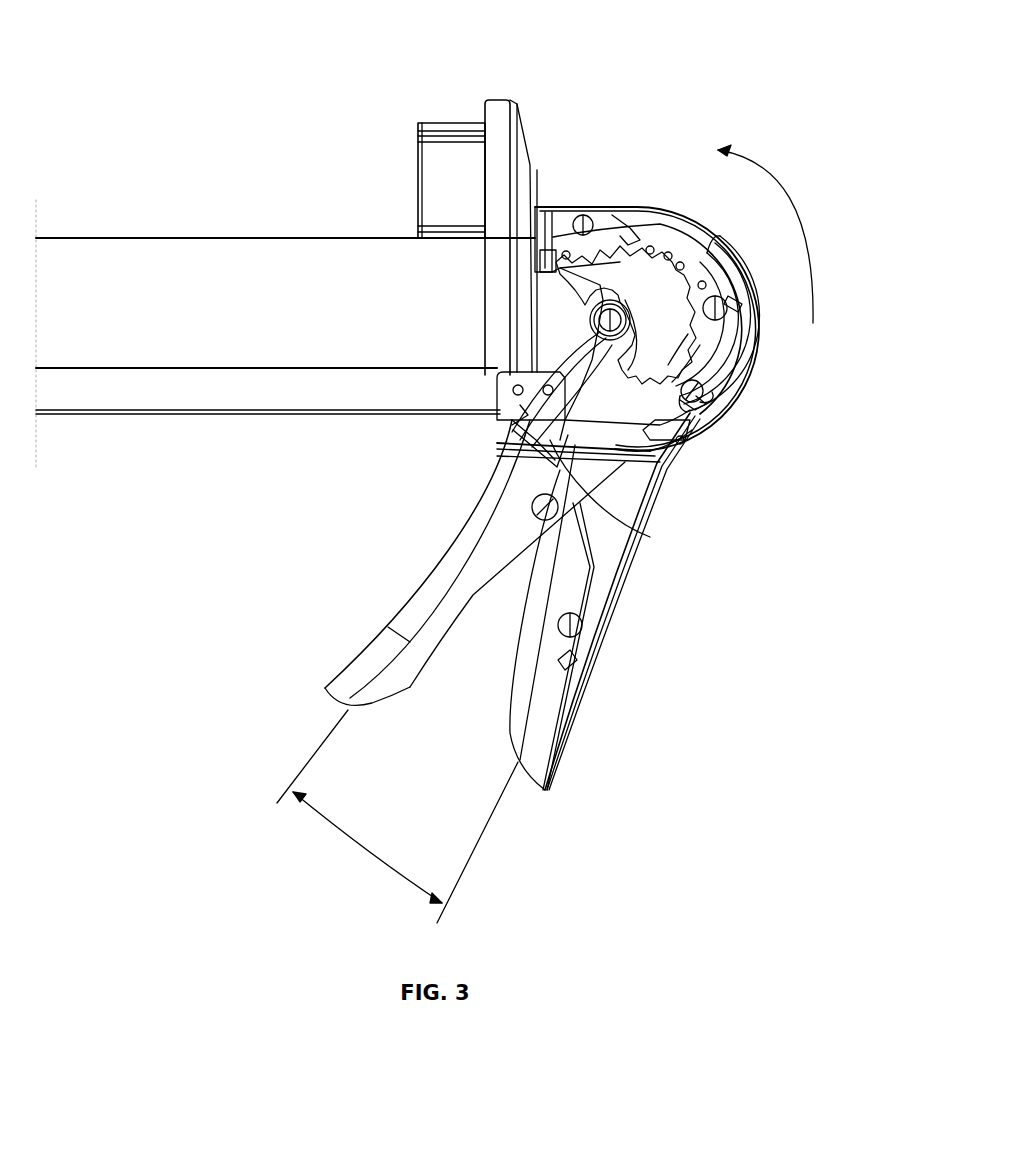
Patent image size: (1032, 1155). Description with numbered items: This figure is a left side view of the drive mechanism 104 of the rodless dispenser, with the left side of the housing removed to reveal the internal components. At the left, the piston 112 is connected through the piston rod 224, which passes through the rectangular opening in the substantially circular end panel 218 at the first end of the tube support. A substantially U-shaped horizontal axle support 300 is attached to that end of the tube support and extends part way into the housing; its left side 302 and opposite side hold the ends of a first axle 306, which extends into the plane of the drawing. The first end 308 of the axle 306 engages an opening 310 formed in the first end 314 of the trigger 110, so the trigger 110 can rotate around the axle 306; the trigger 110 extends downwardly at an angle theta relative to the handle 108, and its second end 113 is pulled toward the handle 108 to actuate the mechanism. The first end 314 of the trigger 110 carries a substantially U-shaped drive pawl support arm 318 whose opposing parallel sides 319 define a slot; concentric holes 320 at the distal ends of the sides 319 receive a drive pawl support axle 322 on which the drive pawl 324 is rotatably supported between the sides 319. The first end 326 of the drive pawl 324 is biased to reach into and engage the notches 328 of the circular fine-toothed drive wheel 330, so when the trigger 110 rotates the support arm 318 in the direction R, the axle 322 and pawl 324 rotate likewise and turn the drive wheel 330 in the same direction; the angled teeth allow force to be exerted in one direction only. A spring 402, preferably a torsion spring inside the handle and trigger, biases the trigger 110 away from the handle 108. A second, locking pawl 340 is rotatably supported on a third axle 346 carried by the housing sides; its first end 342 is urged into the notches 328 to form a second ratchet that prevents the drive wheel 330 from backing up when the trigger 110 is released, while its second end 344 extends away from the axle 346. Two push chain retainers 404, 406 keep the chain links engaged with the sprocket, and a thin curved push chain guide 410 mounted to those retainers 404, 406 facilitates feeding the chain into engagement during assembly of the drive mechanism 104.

The drive mechanism 104 is at (748, 32).
The handle 108 is at (623, 583).
The trigger 110 is at (393, 673).
The piston 112 is at (423, 148).
The second end of the trigger 113 is at (574, 412).
The end panel 218 is at (499, 100).
The piston rod 224 is at (553, 248).
The axle support 300 is at (541, 300).
The left side of the axle support 302 is at (546, 318).
The first axle 306 is at (525, 396).
The first end of the first axle 308 is at (540, 410).
The opening 310 is at (546, 430).
The first end of the trigger 314 is at (560, 442).
The drive pawl support arm 318 is at (698, 407).
The sides of the drive pawl support arm 319 is at (637, 415).
The concentric holes 320 is at (710, 406).
The drive pawl support axle 322 is at (703, 398).
The drive pawl 324 is at (700, 350).
The first end of the drive pawl 326 is at (688, 338).
The notches 328 is at (680, 262).
The drive wheel 330 is at (596, 280).
The second pawl 340 is at (735, 266).
The first end of the second pawl 342 is at (712, 238).
The second end of the second pawl 344 is at (735, 370).
The third axle 346 is at (740, 300).
The spring 402 is at (590, 650).
The push chain retainer 404 is at (585, 214).
The push chain retainer 406 is at (650, 537).
The push chain guide 410 is at (622, 222).
The direction of rotation R is at (783, 178).